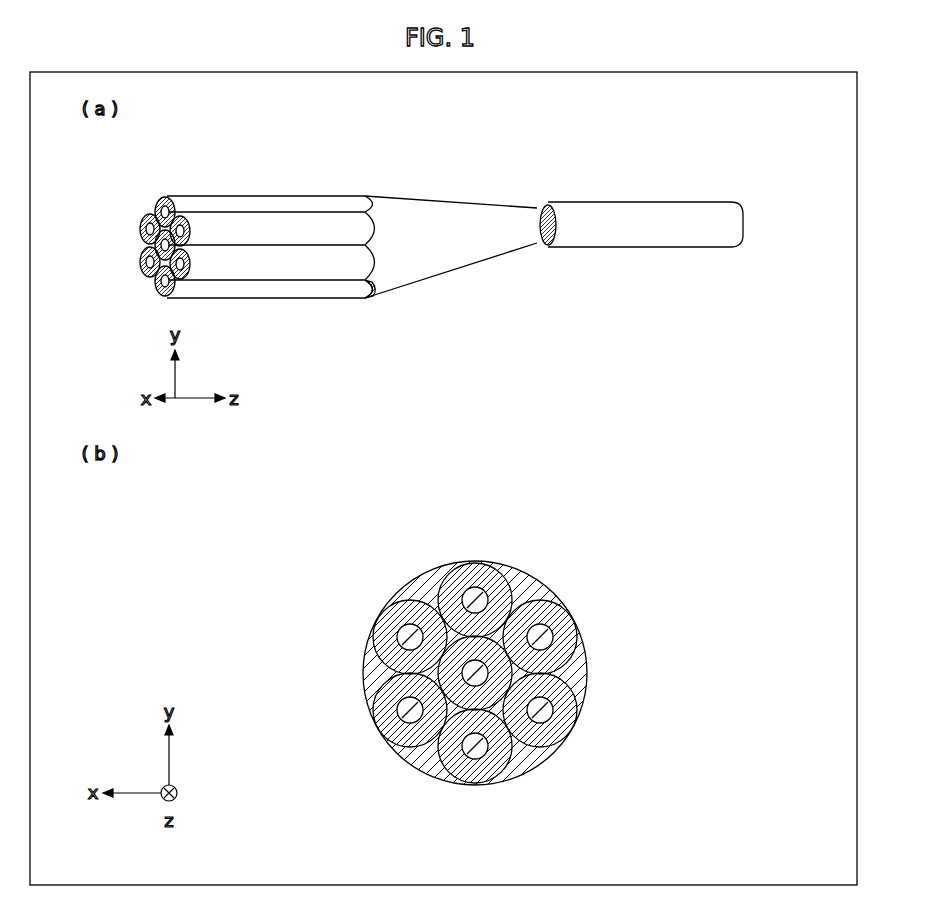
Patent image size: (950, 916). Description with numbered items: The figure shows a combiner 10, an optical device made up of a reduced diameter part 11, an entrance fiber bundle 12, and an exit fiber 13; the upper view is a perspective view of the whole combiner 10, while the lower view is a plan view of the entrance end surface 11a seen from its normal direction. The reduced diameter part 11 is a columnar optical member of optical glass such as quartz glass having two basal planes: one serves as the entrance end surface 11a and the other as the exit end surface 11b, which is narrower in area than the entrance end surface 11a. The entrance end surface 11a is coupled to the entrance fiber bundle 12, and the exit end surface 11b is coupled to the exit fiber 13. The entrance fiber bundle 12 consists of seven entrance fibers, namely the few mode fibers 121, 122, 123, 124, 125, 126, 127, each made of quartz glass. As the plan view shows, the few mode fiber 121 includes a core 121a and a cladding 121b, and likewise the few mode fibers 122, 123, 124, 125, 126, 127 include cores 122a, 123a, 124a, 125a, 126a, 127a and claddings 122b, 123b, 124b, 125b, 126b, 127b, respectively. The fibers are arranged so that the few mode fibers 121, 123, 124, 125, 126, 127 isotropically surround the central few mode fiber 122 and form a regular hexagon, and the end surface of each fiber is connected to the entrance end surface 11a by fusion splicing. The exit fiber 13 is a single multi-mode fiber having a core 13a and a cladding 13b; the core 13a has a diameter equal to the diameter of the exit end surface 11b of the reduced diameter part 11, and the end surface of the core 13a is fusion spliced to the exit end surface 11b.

The combiner 10 is at (419, 150).
The reduced diameter part 11 is at (475, 202).
The entrance end surface 11a is at (356, 298).
The exit end surface 11b is at (533, 250).
The entrance fiber bundle 12 is at (261, 198).
The exit fiber 13 is at (600, 138).
The core 13a is at (543, 208).
The cladding 13b is at (583, 202).
The few mode fiber 121 is at (160, 204).
The core 121a is at (473, 598).
The cladding 121b is at (488, 610).
The few mode fiber 122 is at (158, 246).
The core 122a is at (482, 670).
The cladding 122b is at (510, 686).
The few mode fiber 123 is at (160, 282).
The core 123a is at (482, 748).
The cladding 123b is at (505, 772).
The few mode fiber 124 is at (146, 224).
The core 124a is at (406, 636).
The cladding 124b is at (382, 641).
The few mode fiber 125 is at (172, 230).
The core 125a is at (544, 632).
The cladding 125b is at (566, 630).
The few mode fiber 126 is at (146, 260).
The core 126a is at (406, 710).
The cladding 126b is at (388, 726).
The few mode fiber 127 is at (176, 265).
The core 127a is at (548, 707).
The cladding 127b is at (556, 728).